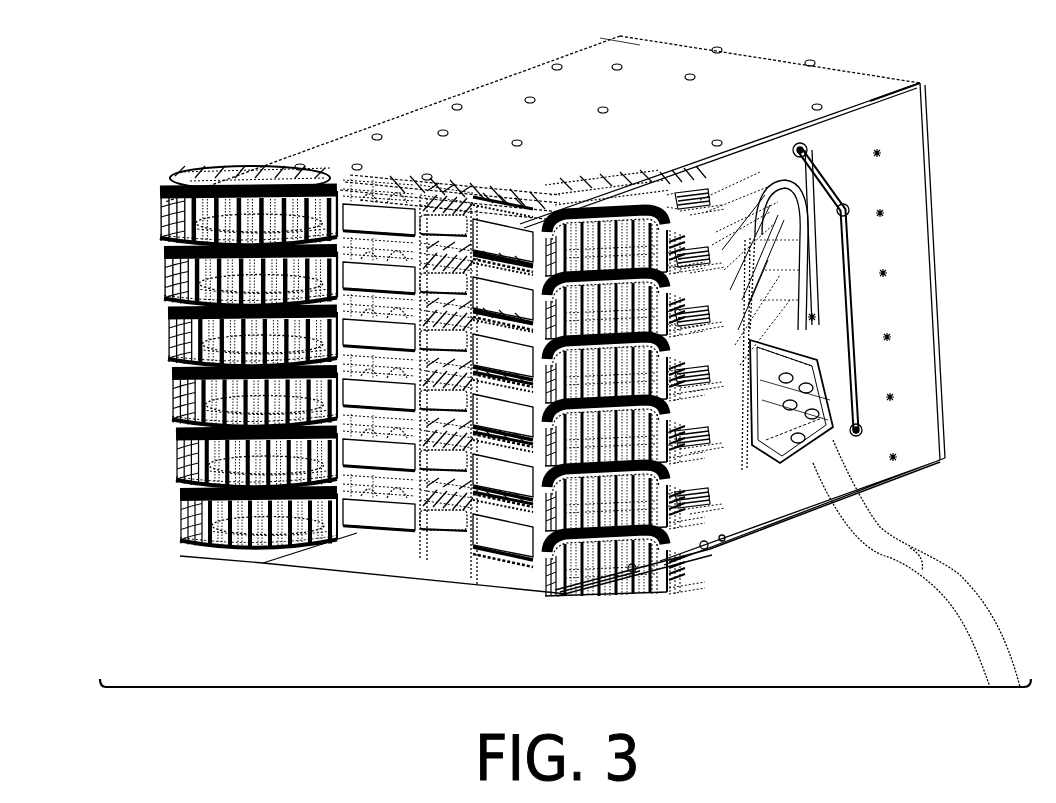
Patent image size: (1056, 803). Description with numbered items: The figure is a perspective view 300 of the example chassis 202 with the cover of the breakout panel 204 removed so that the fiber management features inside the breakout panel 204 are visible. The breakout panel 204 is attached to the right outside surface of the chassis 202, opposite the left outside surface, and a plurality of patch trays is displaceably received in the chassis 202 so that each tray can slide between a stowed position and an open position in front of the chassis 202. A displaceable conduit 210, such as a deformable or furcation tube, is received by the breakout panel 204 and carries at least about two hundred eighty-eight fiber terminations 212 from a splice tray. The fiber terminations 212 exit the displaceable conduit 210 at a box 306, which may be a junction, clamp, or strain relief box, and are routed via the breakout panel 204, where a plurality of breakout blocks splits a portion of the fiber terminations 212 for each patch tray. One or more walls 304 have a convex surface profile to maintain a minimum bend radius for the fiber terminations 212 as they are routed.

The chassis 202 is at (510, 89).
The breakout panel 204 is at (838, 191).
The wall 304 is at (808, 214).
The box 306 is at (807, 361).
The displaceable conduit 210 is at (948, 561).
The fiber terminations 212 is at (976, 587).
The perspective view 300 is at (569, 689).